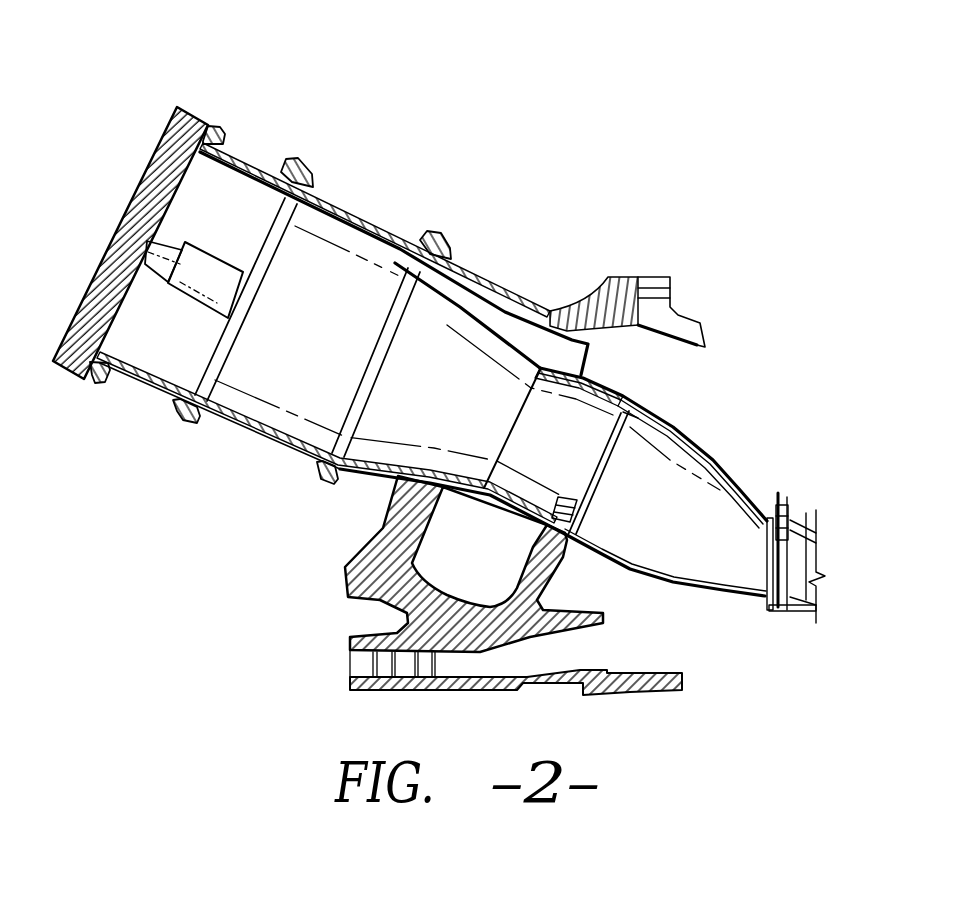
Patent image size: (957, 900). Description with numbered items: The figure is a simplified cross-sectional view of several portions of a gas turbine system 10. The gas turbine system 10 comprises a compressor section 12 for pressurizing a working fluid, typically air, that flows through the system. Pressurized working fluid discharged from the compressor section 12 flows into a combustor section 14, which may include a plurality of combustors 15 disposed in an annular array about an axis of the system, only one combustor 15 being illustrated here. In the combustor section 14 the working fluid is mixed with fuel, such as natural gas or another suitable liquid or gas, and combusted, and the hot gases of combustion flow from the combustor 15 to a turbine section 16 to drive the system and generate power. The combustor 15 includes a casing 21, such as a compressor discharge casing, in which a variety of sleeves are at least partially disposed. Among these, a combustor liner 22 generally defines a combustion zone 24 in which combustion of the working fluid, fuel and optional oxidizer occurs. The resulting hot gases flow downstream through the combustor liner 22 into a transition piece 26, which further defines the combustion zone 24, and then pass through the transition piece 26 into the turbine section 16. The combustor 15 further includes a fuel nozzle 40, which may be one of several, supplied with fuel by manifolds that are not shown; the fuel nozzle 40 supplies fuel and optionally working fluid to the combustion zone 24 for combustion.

The gas turbine system 10 is at (742, 227).
The compressor section 12 is at (332, 661).
The combustor section 14 is at (206, 56).
The combustor 15 is at (388, 226).
The turbine section 16 is at (817, 524).
The casing 21 is at (103, 372).
The combustor liner 22 is at (374, 258).
The combustion zone 24 is at (273, 376).
The transition piece 26 is at (733, 495).
The fuel nozzle 40 is at (168, 278).